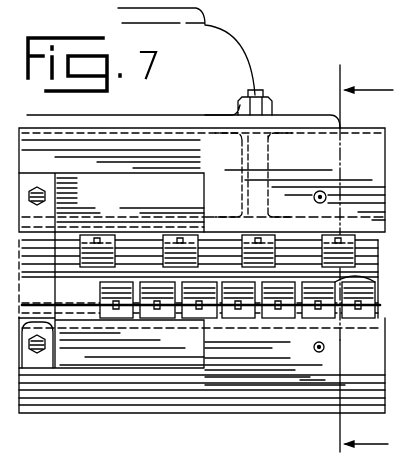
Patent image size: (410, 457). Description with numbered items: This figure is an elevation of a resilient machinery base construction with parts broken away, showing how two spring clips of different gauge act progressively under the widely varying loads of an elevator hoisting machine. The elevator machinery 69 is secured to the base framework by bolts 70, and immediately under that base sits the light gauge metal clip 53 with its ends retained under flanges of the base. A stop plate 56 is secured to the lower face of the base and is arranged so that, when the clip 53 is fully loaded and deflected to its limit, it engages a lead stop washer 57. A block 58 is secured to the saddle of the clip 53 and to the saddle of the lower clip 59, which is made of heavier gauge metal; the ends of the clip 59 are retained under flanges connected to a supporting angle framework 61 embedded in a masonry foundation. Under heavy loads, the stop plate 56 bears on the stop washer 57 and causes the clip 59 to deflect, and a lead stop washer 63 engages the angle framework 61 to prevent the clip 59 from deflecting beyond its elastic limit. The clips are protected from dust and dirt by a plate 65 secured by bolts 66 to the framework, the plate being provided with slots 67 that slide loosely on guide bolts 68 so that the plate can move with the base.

The light gauge metal clip 53 is at (170, 238).
The stop plate 56 is at (372, 232).
The stop washer 57 is at (199, 223).
The block 58 is at (380, 304).
The lower clip 59 is at (377, 285).
The supporting angle framework 61 is at (270, 427).
The lead stop washer 63 is at (382, 318).
The plate 65 is at (56, 197).
The bolts 66 is at (38, 187).
The slots 67 is at (33, 370).
The guide bolts 68 is at (47, 350).
The elevator machinery 69 is at (250, 60).
The bolts 70 is at (264, 100).